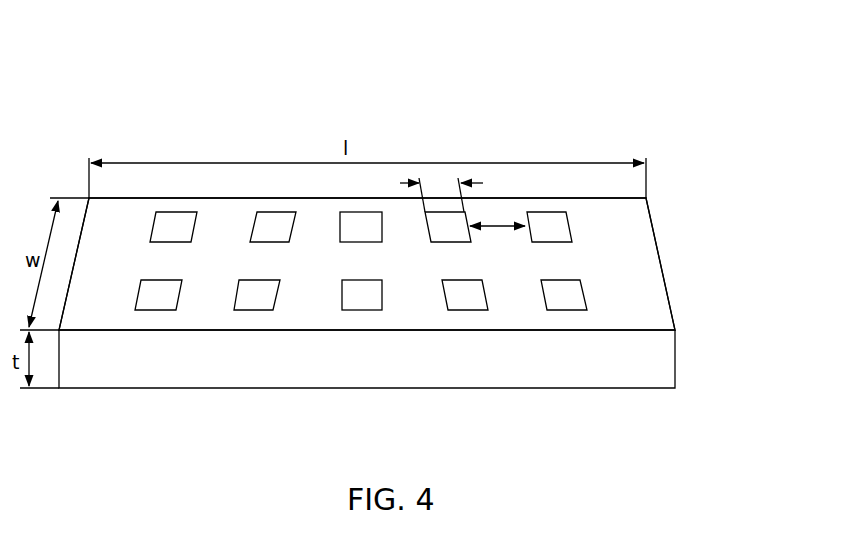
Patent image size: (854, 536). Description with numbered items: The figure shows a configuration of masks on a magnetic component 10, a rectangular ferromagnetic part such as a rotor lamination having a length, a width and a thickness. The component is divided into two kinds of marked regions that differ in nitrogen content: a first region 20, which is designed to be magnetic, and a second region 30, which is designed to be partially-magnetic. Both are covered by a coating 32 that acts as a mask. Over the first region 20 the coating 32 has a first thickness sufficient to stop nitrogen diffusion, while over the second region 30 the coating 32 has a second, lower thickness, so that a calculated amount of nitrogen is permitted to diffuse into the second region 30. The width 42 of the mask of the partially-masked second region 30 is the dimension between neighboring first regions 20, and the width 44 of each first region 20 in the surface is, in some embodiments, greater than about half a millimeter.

The magnetic component 10 is at (650, 56).
The first region 20 is at (223, 248).
The second region 30 is at (592, 293).
The coating 32 is at (357, 309).
The width of the mask of the partially-masked second region 42 is at (436, 183).
The width of each of the first regions 44 is at (490, 228).